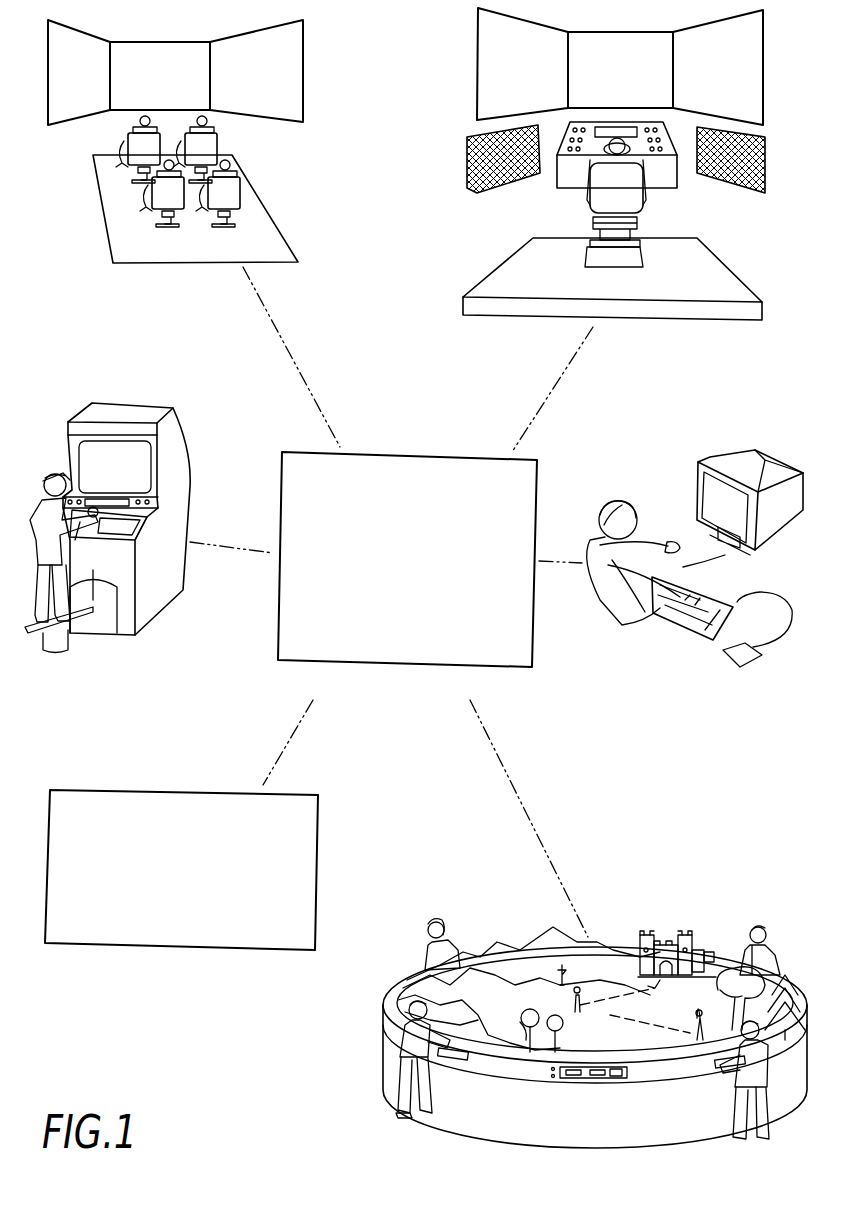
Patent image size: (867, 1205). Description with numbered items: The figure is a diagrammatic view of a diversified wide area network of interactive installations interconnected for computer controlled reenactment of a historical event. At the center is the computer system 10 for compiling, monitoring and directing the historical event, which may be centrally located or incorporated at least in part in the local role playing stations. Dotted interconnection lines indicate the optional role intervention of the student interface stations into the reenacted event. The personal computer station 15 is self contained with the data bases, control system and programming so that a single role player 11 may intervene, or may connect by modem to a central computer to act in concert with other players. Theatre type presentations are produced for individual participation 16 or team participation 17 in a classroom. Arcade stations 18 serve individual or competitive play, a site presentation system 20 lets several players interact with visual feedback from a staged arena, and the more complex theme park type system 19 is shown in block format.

The computer system 10 is at (422, 453).
The single role player 11 is at (619, 501).
The personal computer station 15 is at (810, 585).
The individual participation theatre presentation 16 is at (775, 259).
The team participation theatre presentation 17 is at (323, 201).
The arcade station 18 is at (232, 506).
The theme park system 19 is at (190, 792).
The site presentation system 20 is at (610, 943).